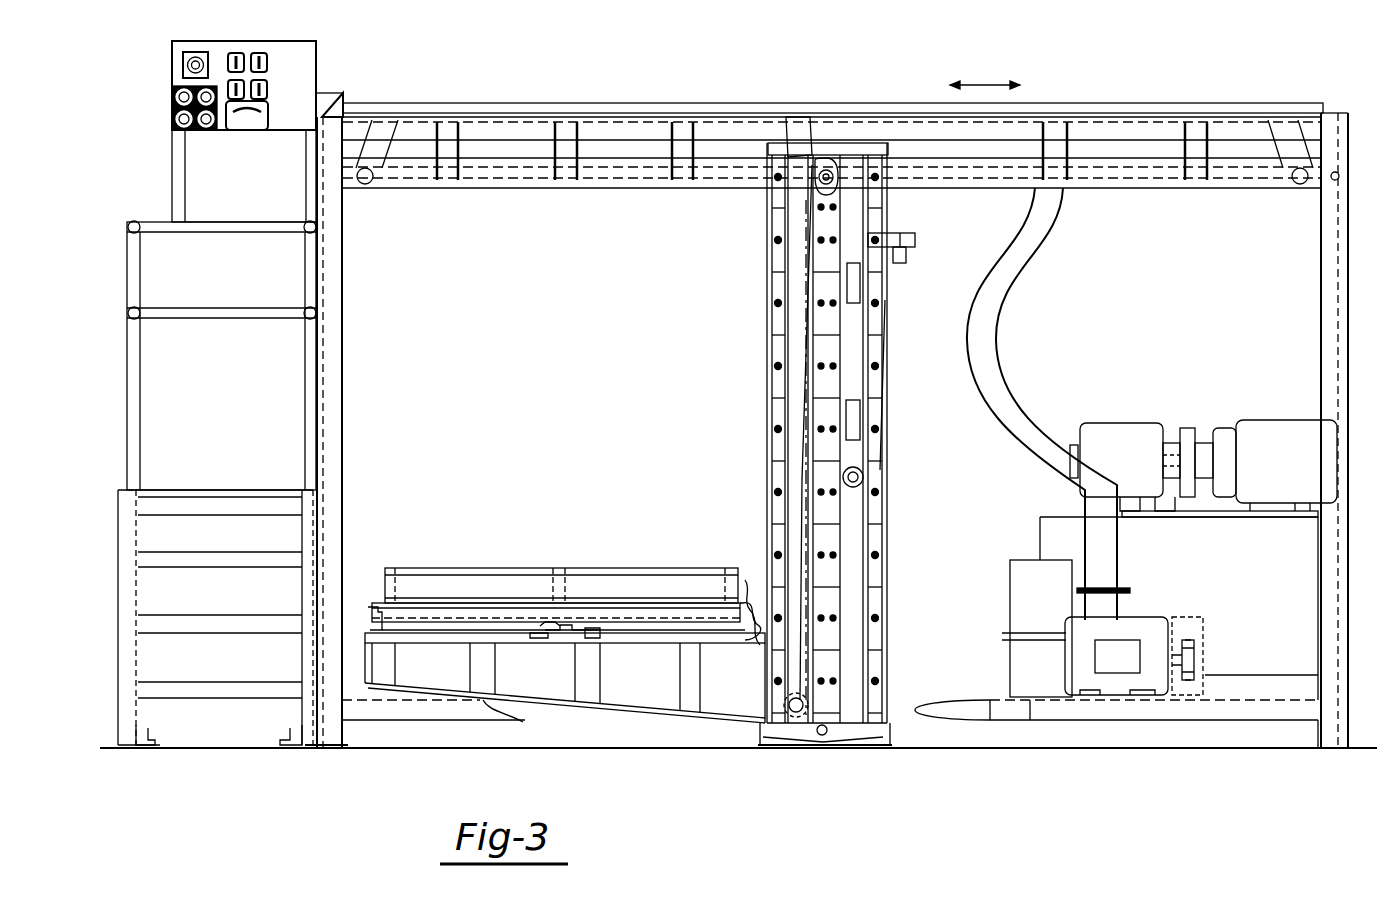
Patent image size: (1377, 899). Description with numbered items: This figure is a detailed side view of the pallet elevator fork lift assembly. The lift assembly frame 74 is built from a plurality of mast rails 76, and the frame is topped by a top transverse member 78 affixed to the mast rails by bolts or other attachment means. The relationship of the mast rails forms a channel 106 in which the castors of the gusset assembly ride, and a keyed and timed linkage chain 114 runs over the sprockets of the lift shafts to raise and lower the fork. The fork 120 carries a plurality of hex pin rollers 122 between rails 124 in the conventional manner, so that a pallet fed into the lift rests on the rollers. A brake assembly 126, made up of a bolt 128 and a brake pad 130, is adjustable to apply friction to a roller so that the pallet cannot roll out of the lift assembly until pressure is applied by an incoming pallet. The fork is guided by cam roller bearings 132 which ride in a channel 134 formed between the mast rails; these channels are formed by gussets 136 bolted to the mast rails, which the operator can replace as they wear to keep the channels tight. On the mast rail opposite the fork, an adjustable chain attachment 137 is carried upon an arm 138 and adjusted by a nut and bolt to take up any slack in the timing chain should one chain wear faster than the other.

The pallet elevator lift assembly frame 74 is at (757, 408).
The mast rails 76 is at (828, 284).
The top transverse member 78 is at (778, 153).
The channel 106 is at (855, 322).
The keyed and timed linkage chain 114 is at (885, 405).
The fork 120 is at (648, 690).
The hex pin rollers 122 is at (412, 583).
The rails 124 is at (760, 575).
The brake assembly 126 is at (570, 658).
The bolt 128 is at (538, 651).
The brake pad 130 is at (565, 655).
The cam roller bearings 132 is at (797, 714).
The channel 134 is at (795, 462).
The gussets 136 is at (777, 380).
The adjustable chain attachment 137 is at (908, 240).
The arm 138 is at (945, 252).